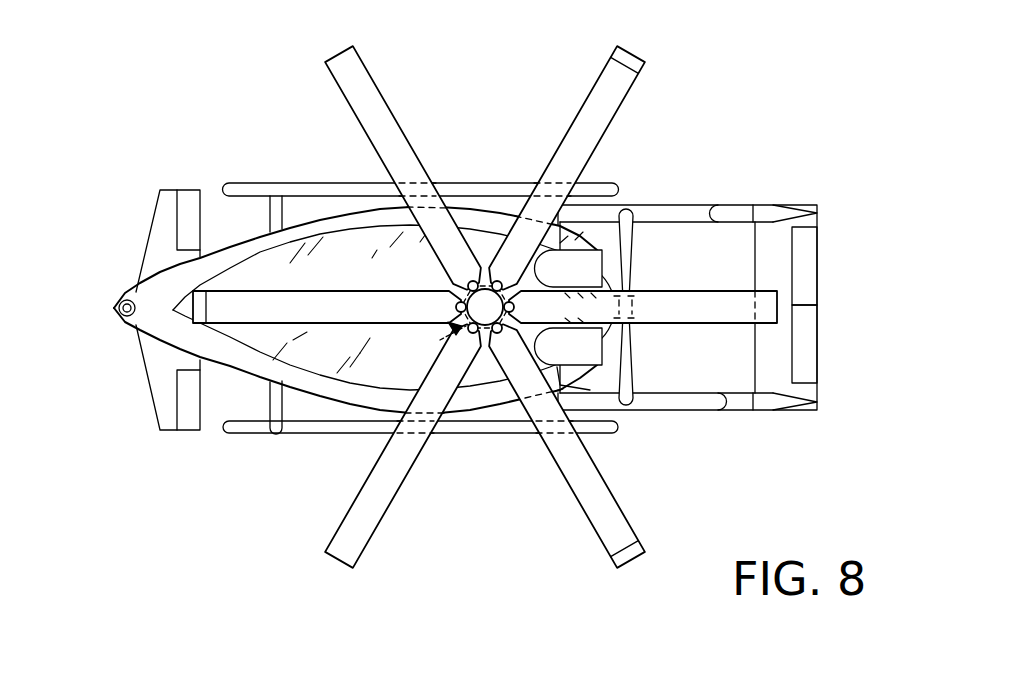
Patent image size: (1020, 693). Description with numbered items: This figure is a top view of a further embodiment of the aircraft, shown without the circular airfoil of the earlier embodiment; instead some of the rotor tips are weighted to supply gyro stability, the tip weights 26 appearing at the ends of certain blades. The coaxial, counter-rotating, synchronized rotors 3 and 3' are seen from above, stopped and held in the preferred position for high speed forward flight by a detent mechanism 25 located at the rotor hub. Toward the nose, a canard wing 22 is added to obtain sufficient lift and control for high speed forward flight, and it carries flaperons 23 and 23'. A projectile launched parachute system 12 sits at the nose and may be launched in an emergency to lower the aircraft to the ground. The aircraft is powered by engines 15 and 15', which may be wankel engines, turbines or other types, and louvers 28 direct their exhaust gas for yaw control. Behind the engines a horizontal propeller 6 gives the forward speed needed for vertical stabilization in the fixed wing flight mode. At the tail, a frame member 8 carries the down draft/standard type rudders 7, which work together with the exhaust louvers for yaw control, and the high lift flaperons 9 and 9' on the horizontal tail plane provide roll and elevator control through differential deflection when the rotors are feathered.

The rotor 3 is at (433, 307).
The rotor 3' is at (528, 307).
The horizontal propeller 6 is at (636, 262).
The rudder 7 is at (792, 206).
The frame cross member 8 is at (750, 271).
The flaperon 9 is at (834, 266).
The flaperon 9' is at (838, 344).
The projectile launched parachute system 12 is at (122, 299).
The engine 15 is at (569, 268).
The engine 15' is at (569, 346).
The canard wing 22 is at (148, 213).
The flaperon 23 is at (215, 192).
The flaperon 23' is at (164, 426).
The detent mechanism 25 is at (453, 331).
The blade tip weight 26 is at (646, 60).
The louvers 28 is at (592, 391).